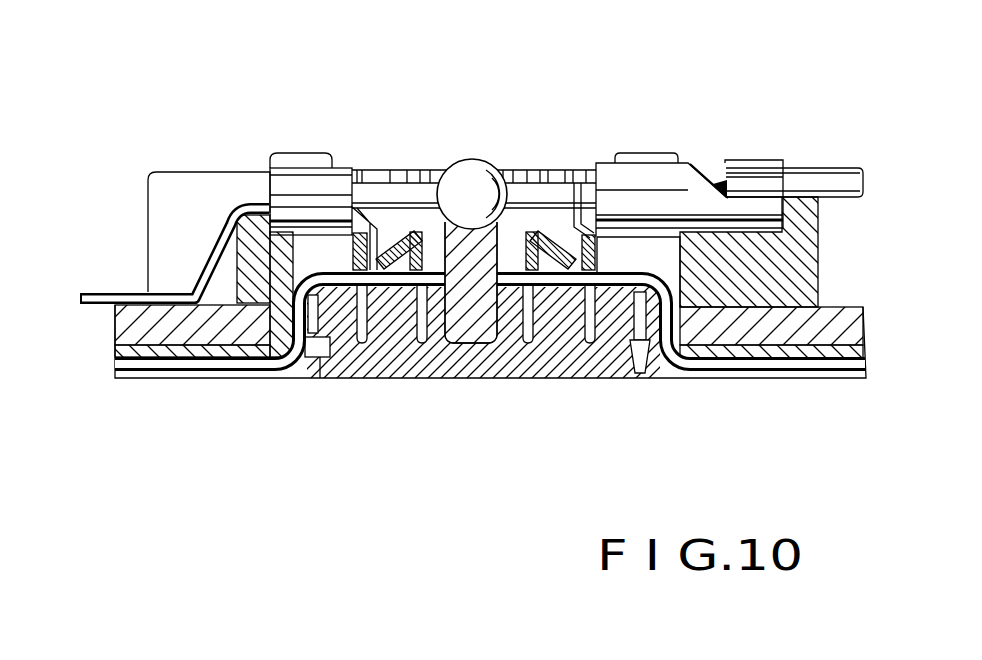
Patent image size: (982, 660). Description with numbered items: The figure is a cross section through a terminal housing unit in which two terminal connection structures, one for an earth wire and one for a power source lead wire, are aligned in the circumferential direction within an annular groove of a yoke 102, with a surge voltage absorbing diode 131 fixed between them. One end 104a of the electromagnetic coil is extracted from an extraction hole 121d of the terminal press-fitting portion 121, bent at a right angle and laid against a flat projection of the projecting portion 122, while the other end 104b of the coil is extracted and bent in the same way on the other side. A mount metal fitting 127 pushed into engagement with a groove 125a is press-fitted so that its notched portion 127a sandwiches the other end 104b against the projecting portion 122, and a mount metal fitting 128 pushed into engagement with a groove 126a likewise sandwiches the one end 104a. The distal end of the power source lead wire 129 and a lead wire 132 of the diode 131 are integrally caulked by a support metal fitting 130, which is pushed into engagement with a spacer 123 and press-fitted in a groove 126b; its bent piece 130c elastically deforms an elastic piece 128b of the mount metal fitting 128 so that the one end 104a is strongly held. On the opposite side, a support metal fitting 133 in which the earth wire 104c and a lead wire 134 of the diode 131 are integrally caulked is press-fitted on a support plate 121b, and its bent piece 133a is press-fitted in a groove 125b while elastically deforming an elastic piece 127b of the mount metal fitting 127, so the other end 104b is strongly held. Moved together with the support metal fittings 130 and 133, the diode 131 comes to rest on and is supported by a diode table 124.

The yoke 102 is at (882, 319).
The one end of electromagnetic coil 104a is at (764, 374).
The other end of electromagnetic coil 104b is at (385, 292).
The earth wire 104c is at (122, 296).
The terminal press-fitting portion 121 is at (339, 392).
The support plate 121b is at (318, 228).
The extraction hole 121d is at (646, 378).
The projecting portion 122 is at (627, 256).
The spacer 123 is at (836, 258).
The diode table 124 is at (487, 340).
The groove of projecting portion 125a is at (447, 312).
The groove of recess portion 125b is at (356, 342).
The groove of projecting portion 126a is at (528, 344).
The groove 126b is at (590, 345).
The mount metal fitting 127 is at (399, 212).
The notched portion 127a is at (421, 344).
The elastic piece 127b is at (392, 196).
The mount metal fitting 128 is at (540, 212).
The elastic piece 128b is at (578, 185).
The lead wire of power source 129 is at (805, 176).
The support metal fitting 130 is at (703, 150).
The bent piece 130c is at (594, 205).
The surge voltage absorbing diode 131 is at (480, 160).
The lead wire of diode 132 is at (548, 250).
The support metal fitting 133 is at (287, 141).
The bent piece 133a is at (372, 222).
The lead wire of diode 134 is at (420, 232).